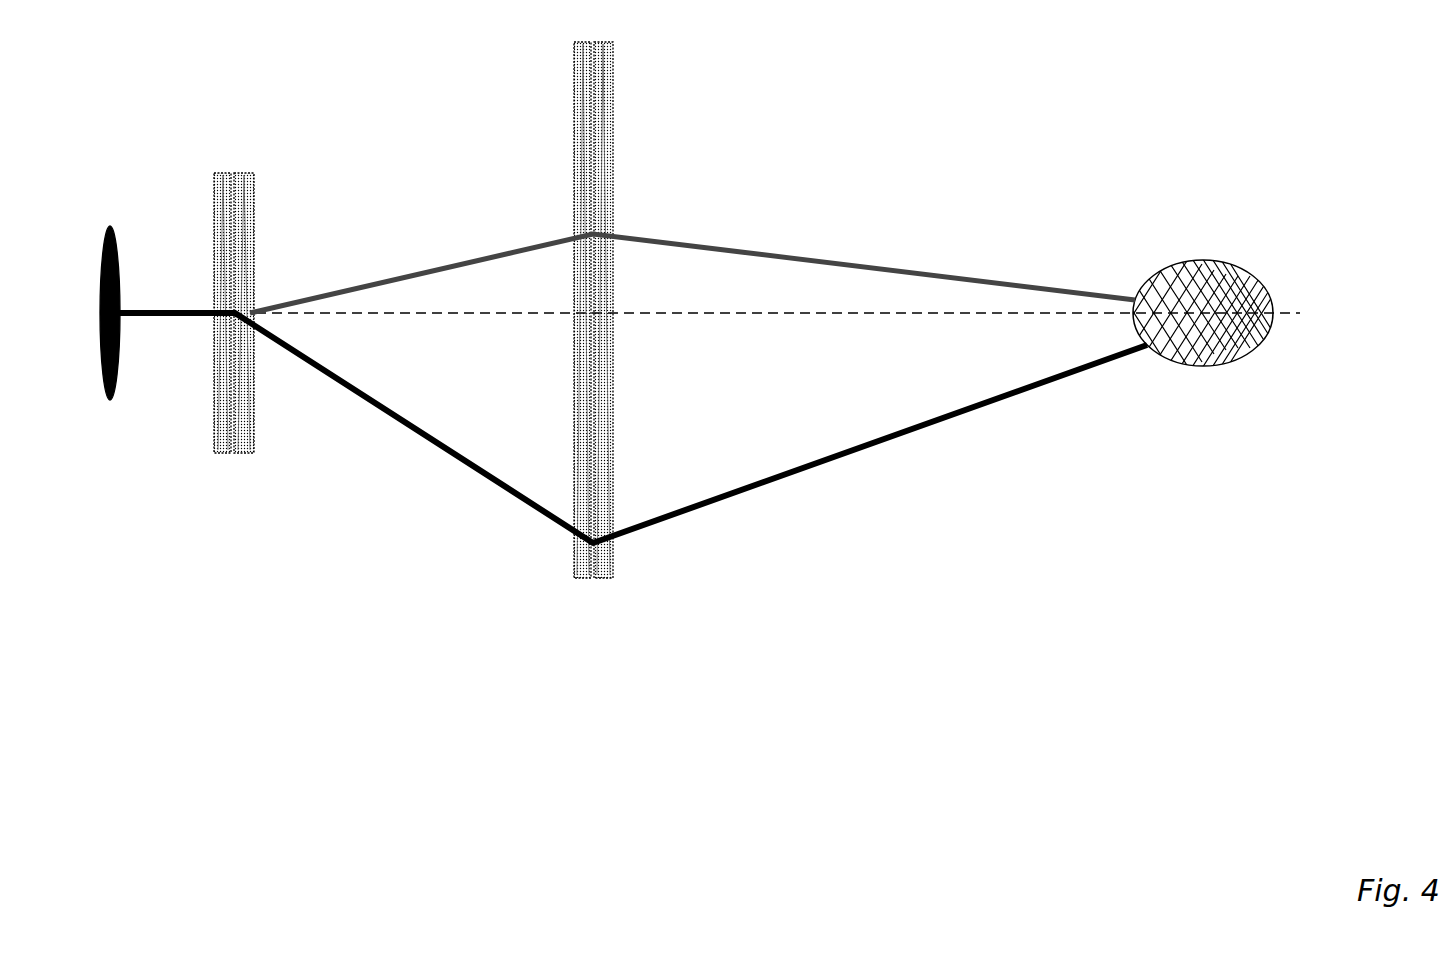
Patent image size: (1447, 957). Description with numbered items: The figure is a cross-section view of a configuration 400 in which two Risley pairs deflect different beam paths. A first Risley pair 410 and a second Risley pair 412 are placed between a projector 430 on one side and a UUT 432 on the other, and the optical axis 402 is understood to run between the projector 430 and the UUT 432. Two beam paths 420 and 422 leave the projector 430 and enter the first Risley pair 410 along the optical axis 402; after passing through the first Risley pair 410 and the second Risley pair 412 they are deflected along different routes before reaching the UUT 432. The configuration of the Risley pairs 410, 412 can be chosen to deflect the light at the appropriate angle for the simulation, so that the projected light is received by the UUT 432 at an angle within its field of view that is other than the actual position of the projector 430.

The configuration 400 is at (196, 82).
The optical axis 402 is at (802, 313).
The first Risley pair 410 is at (254, 457).
The second Risley pair 412 is at (613, 582).
The beam path 420 is at (365, 404).
The beam path 422 is at (368, 285).
The projector 430 is at (106, 395).
The UUT 432 is at (1193, 353).